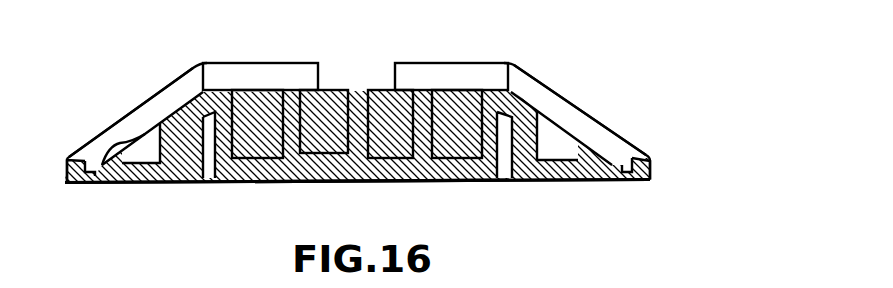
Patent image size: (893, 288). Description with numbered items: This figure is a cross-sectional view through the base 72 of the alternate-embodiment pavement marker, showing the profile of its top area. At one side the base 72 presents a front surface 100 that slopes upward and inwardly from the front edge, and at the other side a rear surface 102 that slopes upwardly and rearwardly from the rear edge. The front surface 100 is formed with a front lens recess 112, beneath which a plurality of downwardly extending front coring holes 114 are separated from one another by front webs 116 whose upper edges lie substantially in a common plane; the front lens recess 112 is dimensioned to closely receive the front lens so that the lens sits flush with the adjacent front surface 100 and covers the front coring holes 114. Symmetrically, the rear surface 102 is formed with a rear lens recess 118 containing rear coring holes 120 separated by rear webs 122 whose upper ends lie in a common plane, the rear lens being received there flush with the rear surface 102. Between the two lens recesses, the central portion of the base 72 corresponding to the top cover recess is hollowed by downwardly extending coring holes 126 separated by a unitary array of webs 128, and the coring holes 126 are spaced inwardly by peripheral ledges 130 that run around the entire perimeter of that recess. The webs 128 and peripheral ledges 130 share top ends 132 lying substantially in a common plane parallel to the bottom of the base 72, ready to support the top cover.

The base 72 is at (594, 80).
The front surface 100 is at (122, 117).
The rear surface 102 is at (543, 84).
The front lens recess 112 is at (172, 124).
The front coring holes 114 is at (160, 140).
The front webs 116 is at (96, 183).
The rear lens recess 118 is at (585, 140).
The rear coring holes 120 is at (561, 150).
The rear webs 122 is at (578, 181).
The coring holes 126 is at (262, 133).
The webs 128 is at (368, 122).
The peripheral ledges 130 is at (222, 89).
The top ends 132 is at (397, 86).